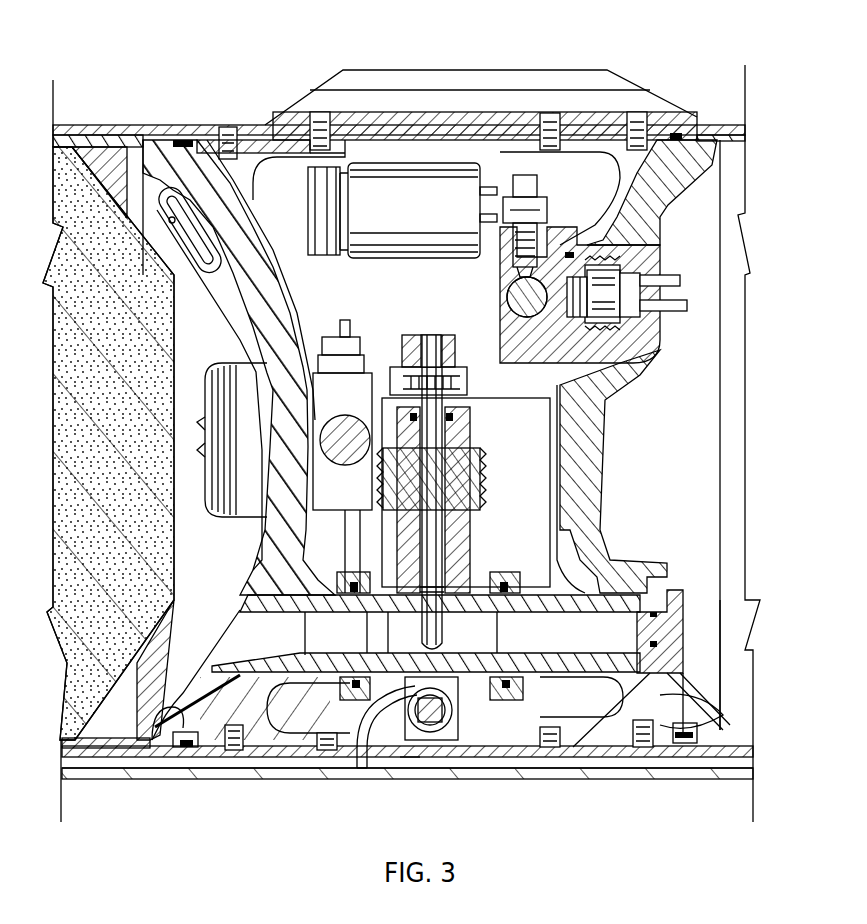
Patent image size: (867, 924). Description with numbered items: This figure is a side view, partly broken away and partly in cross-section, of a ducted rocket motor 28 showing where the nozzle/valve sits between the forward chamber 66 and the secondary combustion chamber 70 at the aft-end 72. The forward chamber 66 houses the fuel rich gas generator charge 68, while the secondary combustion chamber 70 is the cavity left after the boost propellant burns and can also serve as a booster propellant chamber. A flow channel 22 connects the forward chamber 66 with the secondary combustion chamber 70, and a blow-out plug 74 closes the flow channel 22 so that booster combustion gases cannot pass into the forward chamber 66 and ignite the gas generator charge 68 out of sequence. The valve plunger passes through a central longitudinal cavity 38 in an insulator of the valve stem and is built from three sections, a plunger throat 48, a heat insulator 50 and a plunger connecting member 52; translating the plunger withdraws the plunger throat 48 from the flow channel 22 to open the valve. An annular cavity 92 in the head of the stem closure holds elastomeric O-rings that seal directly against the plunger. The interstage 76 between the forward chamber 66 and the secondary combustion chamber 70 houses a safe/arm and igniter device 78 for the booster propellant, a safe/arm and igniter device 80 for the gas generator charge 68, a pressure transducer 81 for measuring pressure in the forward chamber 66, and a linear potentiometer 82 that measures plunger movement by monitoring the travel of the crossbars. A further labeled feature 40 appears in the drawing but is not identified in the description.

The flow channel 22 is at (333, 653).
The ducted rocket motor 28 is at (647, 770).
The central longitudinal cavity 38 is at (443, 587).
The chamber space 40 is at (313, 633).
The plunger throat 48 is at (445, 632).
The heat insulator 50 is at (433, 563).
The plunger connecting member 52 is at (432, 475).
The forward chamber 66 is at (180, 633).
The fuel rich gas generator charge 68 is at (83, 550).
The secondary combustion chamber 70 is at (710, 632).
The aft-end 72 is at (720, 183).
The blow-out plug 74 is at (683, 613).
The interstage 76 is at (413, 785).
The safe/arm and igniter device 78 is at (660, 263).
The safe/arm and igniter device 80 is at (520, 190).
The pressure transducer 81 is at (406, 180).
The linear potentiometer 82 is at (367, 768).
The annular cavity 92 is at (440, 497).